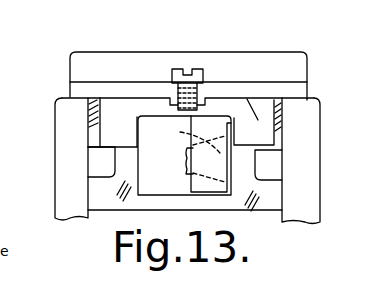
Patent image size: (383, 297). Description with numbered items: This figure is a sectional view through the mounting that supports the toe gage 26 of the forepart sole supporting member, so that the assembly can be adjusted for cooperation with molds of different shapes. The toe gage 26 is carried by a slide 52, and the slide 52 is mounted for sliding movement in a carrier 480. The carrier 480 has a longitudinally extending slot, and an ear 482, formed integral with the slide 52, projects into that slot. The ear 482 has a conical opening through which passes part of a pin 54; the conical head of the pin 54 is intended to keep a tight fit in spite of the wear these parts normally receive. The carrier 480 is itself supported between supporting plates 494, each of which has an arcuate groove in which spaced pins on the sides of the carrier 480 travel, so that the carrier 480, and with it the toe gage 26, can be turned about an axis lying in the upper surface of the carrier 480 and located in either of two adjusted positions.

The toe gage 26 is at (266, 63).
The carrier 480 is at (118, 117).
The slide 52 is at (238, 113).
The supporting plate 494 is at (57, 158).
The pin 54 is at (180, 132).
The ear 482 is at (193, 181).